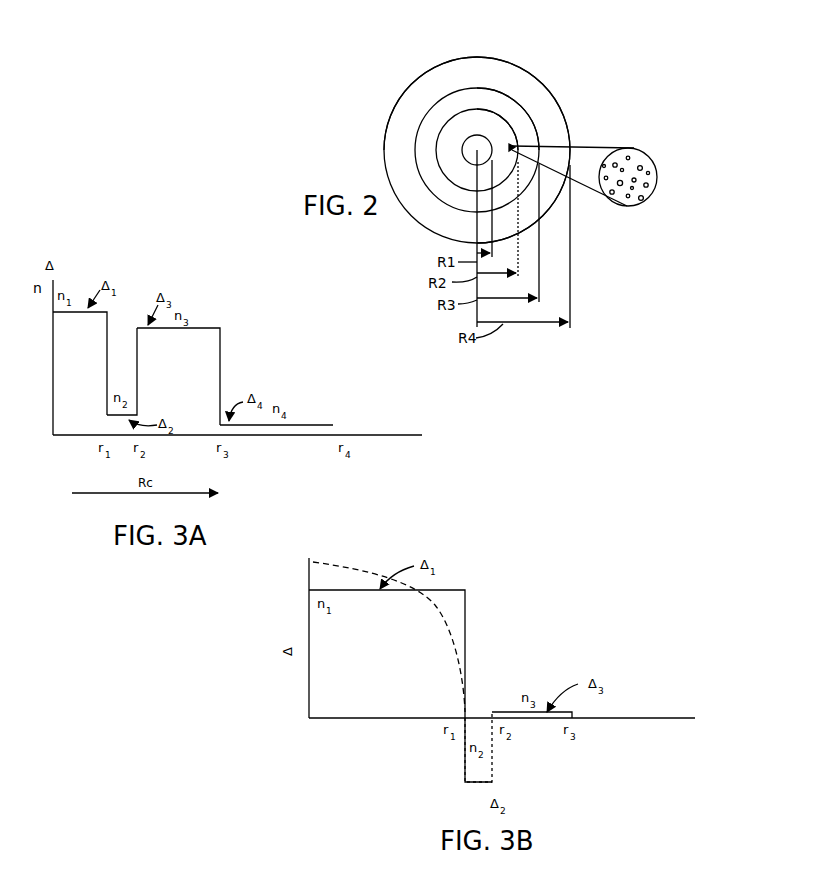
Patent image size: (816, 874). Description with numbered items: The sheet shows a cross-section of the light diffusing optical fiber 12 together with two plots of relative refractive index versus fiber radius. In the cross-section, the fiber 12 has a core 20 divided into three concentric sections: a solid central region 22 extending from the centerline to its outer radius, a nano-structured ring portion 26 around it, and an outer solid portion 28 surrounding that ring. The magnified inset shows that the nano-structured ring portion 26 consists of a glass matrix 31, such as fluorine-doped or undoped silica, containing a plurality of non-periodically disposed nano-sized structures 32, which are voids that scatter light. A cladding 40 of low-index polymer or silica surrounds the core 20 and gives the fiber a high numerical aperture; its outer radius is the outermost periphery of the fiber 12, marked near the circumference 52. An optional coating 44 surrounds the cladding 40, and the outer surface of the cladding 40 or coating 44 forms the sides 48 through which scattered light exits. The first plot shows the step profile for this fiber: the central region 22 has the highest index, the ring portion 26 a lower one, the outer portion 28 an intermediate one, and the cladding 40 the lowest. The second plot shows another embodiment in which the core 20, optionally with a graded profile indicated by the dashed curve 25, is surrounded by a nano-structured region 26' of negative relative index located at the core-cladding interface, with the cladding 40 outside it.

In FIG. 2, the light diffusing optical fiber 12 is at (398, 70).
In FIG. 2, the core 20 is at (622, 80).
In FIG. 3B, the core 20 is at (417, 592).
In FIG. 2, the solid central region 22 is at (492, 138).
In FIG. 3A, the solid central region 22 is at (80, 363).
In FIG. 3B, the alpha (graded) index profile 25 is at (494, 574).
In FIG. 2, the nano-structured ring portion 26 is at (549, 123).
In FIG. 3A, the nano-structured ring portion 26 is at (122, 371).
In FIG. 3B, the nano-structured region 26' is at (491, 722).
In FIG. 2, the outer solid portion 28 is at (510, 110).
In FIG. 3A, the outer solid portion 28 is at (178, 376).
In FIG. 2, the glass matrix 31 is at (647, 158).
In FIG. 2, the nano-sized structures 32 is at (628, 203).
In FIG. 2, the cladding 40 is at (525, 83).
In FIG. 3A, the cladding 40 is at (276, 410).
In FIG. 3B, the cladding 40 is at (532, 738).
In FIG. 2, the coating 44 is at (515, 62).
In FIG. 2, the sides 48 is at (387, 125).
In FIG. 2, the outer circumference of cladding 52 is at (545, 87).